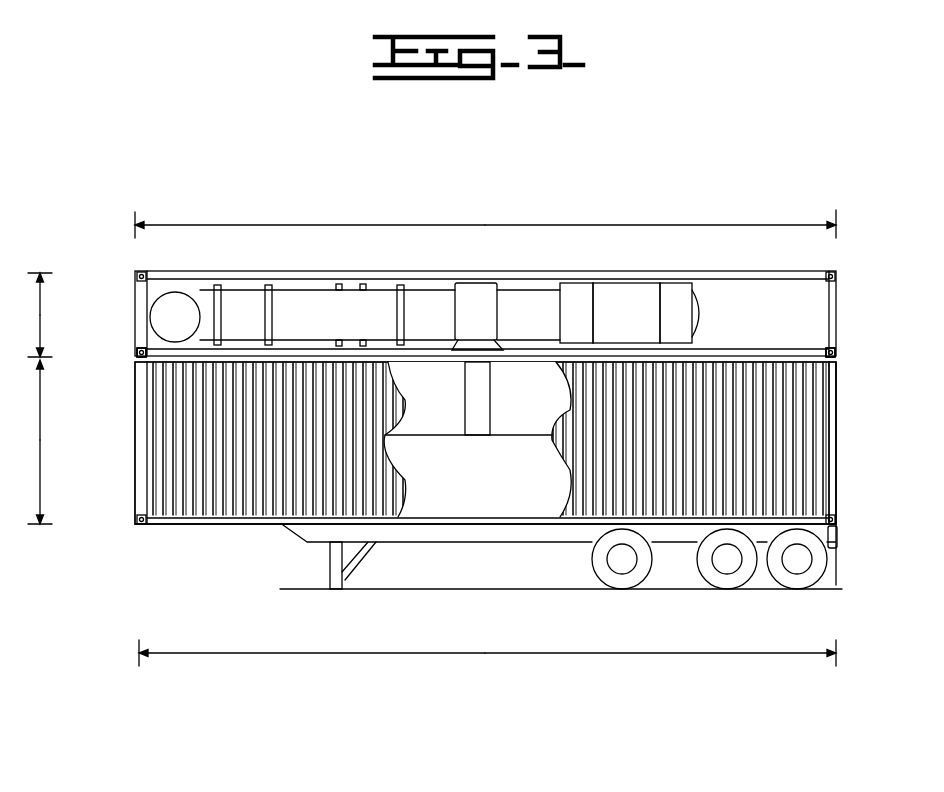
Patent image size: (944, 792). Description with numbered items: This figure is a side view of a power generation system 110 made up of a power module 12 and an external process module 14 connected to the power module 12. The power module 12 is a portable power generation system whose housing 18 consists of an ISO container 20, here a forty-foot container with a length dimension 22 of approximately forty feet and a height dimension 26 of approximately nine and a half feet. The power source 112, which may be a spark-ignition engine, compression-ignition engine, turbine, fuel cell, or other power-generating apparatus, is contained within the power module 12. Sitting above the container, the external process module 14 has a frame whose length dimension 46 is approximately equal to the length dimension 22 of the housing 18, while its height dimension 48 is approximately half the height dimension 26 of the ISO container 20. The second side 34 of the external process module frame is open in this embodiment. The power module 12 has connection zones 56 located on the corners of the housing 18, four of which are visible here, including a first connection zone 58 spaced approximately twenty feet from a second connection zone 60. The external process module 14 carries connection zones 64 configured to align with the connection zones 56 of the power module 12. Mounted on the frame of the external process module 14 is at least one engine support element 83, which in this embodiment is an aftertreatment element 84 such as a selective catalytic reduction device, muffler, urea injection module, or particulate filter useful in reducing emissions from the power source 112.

The power generation system 110 is at (78, 274).
The power module 12 is at (121, 410).
The external process module 14 is at (700, 271).
The housing 18 is at (838, 452).
The ISO container 20 is at (137, 485).
The length dimension 22 is at (432, 655).
The height dimension 26 is at (42, 490).
The second side 34 is at (470, 285).
The length dimension 46 is at (420, 225).
The height dimension 48 is at (42, 322).
The connection zone 56 is at (137, 357).
The first connection zone 58 is at (135, 366).
The second connection zone 60 is at (840, 360).
The connection zone 64 is at (137, 274).
The engine support element 83 is at (362, 310).
The aftertreatment element 84 is at (295, 310).
The power source 112 is at (450, 445).